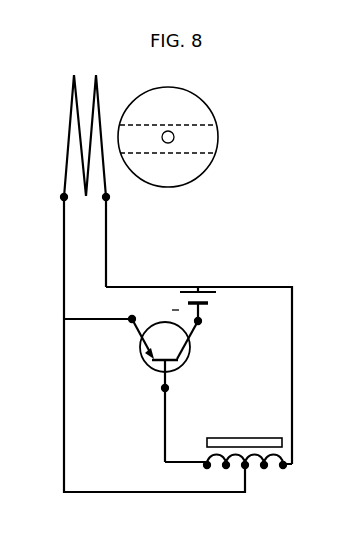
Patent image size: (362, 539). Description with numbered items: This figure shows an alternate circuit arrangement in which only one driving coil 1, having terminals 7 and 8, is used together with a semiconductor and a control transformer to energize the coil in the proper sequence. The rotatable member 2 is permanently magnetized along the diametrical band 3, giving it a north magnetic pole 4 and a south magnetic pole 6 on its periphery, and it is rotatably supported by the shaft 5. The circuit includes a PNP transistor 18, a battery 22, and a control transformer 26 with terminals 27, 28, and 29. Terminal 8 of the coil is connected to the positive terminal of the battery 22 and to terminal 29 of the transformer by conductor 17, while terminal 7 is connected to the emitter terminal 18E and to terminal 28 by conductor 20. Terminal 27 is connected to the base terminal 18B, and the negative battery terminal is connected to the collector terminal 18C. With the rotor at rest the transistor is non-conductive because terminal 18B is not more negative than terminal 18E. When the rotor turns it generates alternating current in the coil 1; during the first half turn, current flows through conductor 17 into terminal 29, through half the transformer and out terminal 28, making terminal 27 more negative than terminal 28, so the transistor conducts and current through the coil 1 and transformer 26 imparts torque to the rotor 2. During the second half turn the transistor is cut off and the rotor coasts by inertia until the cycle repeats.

The coil 1 is at (97, 84).
The rotatable member 2 is at (169, 181).
The diametrical band 3 is at (147, 132).
The north magnetic pole 4 is at (132, 141).
The shaft 5 is at (170, 130).
The south magnetic pole 6 is at (203, 146).
The terminal 7 is at (63, 200).
The terminal 8 is at (107, 199).
The conductor 17 is at (232, 287).
The PNP transistor 18 is at (141, 350).
The emitter terminal 18E is at (148, 313).
The base terminal 18B is at (184, 380).
The collector terminal 18C is at (201, 321).
The conductor 20 is at (63, 370).
The battery 22 is at (214, 297).
The control transformer 26 is at (265, 438).
The terminal 27 is at (207, 466).
The terminal 28 is at (246, 468).
The terminal 29 is at (284, 466).